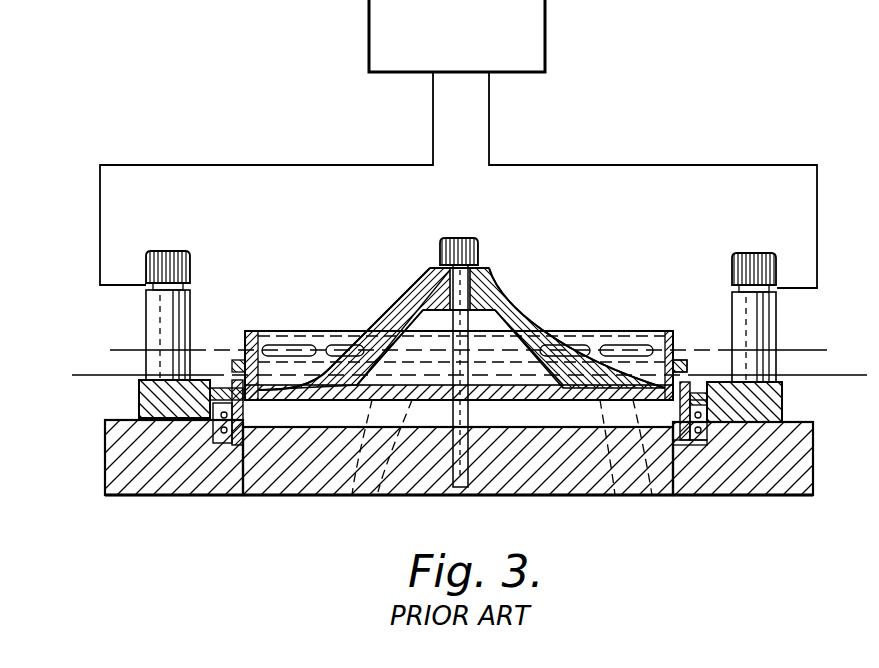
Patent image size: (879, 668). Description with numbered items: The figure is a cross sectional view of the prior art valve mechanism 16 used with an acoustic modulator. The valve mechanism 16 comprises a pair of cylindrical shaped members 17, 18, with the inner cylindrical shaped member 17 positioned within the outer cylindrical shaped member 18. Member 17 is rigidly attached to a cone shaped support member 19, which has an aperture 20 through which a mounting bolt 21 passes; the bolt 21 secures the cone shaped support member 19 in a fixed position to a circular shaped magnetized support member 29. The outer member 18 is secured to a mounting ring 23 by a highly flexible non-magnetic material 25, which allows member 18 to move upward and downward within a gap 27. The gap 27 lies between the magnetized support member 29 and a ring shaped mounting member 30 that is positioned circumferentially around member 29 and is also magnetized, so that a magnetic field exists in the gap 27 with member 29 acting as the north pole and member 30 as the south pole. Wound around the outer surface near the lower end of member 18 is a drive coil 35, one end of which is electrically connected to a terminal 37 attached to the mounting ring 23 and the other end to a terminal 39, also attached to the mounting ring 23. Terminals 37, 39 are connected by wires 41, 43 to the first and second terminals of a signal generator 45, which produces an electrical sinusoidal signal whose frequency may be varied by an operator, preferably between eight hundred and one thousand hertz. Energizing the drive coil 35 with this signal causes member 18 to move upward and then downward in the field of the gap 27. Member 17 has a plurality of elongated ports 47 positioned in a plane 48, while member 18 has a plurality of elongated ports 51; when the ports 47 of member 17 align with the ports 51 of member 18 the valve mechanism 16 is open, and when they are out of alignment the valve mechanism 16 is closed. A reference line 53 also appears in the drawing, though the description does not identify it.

The prior art valve mechanism 16 is at (392, 313).
The cylindrical shaped member 17 is at (272, 331).
The cylindrical shaped member 18 is at (678, 360).
The cone shaped support member 19 is at (424, 290).
The aperture 20 is at (500, 274).
The mounting bolt 21 is at (479, 240).
The mounting ring 23 is at (147, 397).
The highly flexible non-magnetic material 25 is at (782, 393).
The gap 27 is at (705, 440).
The circular shaped magnetized support member 29 is at (556, 496).
The ring shaped mounting member 30 is at (202, 483).
The drive coil 35 is at (697, 412).
The terminal 37 is at (777, 330).
The terminal 39 is at (150, 318).
The wire 41 is at (489, 125).
The wire 43 is at (433, 110).
The signal generator 45 is at (547, 48).
The elongated ports 47 is at (338, 345).
The plane 48 is at (110, 350).
The elongated ports 51 is at (358, 500).
The reference line 53 is at (100, 375).